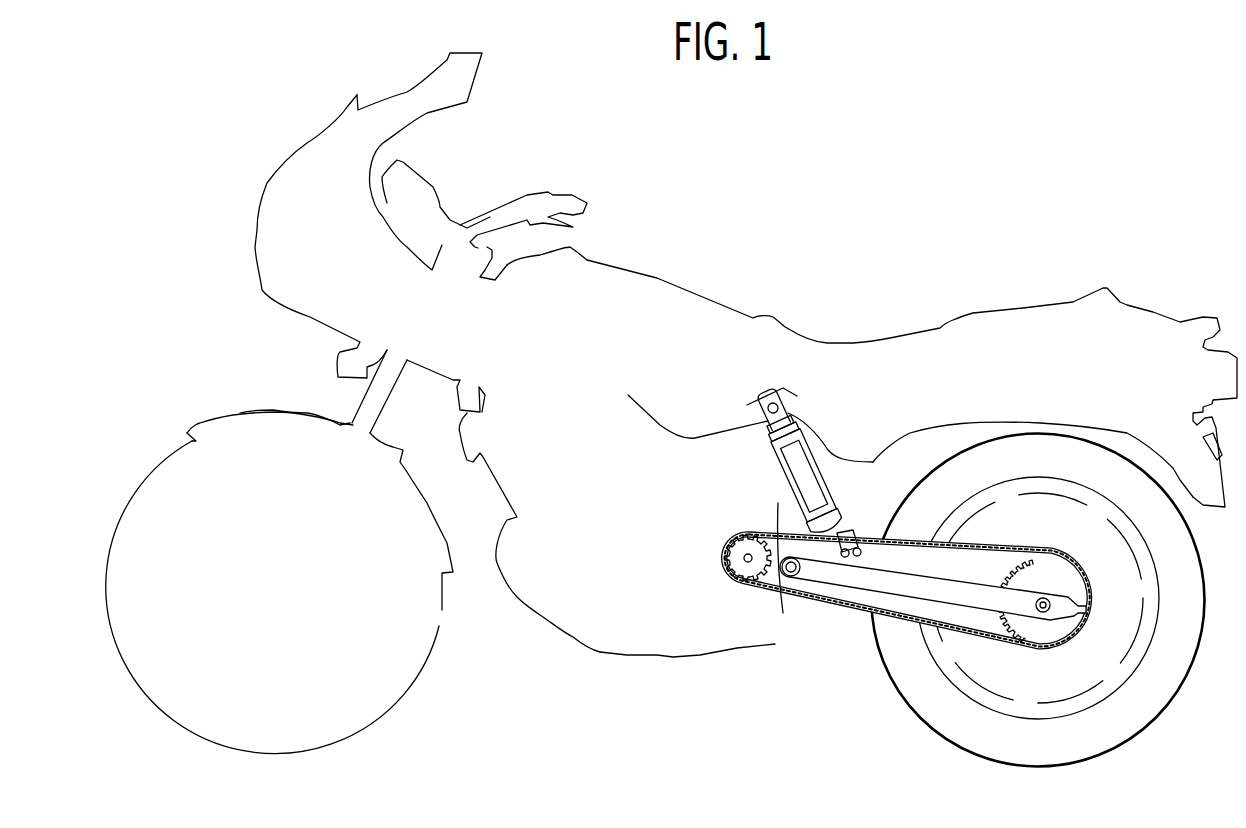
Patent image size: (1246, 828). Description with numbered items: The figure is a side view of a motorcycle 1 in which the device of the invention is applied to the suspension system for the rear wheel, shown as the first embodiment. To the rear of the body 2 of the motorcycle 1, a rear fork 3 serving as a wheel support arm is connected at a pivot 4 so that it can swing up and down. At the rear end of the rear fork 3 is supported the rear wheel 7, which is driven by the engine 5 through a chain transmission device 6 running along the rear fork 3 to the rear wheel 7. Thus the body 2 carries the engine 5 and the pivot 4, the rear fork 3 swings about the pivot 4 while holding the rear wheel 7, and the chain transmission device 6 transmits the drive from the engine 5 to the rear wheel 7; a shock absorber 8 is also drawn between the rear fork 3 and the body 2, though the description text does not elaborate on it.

The motorcycle 1 is at (923, 295).
The body 2 is at (777, 513).
The rear fork 3 is at (972, 585).
The pivot 4 is at (800, 567).
The engine 5 is at (737, 648).
The chain transmission device 6 is at (982, 548).
The rear wheel 7 is at (1195, 568).
The shock absorber 8 is at (803, 462).